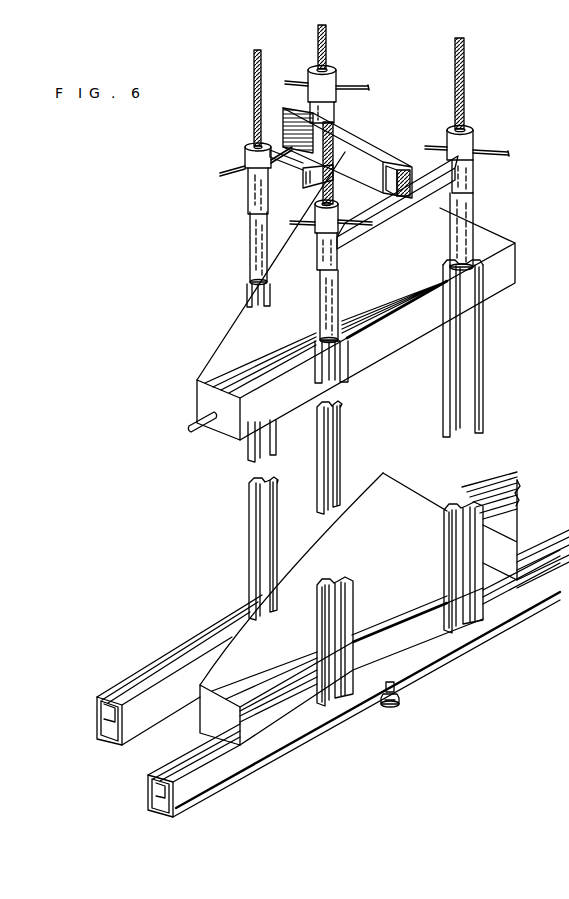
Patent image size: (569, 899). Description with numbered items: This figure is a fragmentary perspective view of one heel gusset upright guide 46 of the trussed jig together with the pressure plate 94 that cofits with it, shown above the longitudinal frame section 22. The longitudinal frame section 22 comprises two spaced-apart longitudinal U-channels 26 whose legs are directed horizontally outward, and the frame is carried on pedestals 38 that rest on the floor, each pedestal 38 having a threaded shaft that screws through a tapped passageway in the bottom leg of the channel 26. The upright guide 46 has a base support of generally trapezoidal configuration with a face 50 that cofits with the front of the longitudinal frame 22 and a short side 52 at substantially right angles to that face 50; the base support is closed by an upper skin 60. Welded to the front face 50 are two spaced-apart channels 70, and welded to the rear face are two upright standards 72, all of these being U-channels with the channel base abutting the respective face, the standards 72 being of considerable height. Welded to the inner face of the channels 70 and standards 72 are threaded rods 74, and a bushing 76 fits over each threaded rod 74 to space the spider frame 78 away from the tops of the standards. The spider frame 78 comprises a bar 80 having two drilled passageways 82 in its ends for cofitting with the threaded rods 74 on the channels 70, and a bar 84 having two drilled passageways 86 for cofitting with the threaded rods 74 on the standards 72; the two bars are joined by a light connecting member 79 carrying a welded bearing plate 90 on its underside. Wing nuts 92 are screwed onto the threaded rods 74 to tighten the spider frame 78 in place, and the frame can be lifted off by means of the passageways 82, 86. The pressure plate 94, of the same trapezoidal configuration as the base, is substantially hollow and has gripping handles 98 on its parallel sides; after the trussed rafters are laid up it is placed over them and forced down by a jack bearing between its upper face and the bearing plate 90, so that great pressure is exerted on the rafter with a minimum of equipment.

The longitudinal frame section 22 is at (103, 697).
The longitudinal U-channel 26 is at (104, 734).
The pedestal 38 is at (400, 702).
The heel gusset upright guide 46 is at (411, 497).
The face 50 is at (409, 634).
The short side 52 is at (208, 710).
The upper skin 60 is at (385, 479).
The channel 70 is at (348, 587).
The upright standard 72 is at (304, 506).
The threaded rod 74 is at (254, 60).
The bushing 76 is at (474, 212).
The spider frame 78 is at (250, 244).
The square tube beam 79 is at (362, 140).
The bar 80 is at (437, 188).
The drilled passageway 82 is at (327, 238).
The bar 84 is at (288, 172).
The drilled passageway 86 is at (247, 186).
The bearing plate 90 is at (313, 185).
The wing nut 92 is at (247, 150).
The pressure plate 94 is at (516, 272).
The gripping handle 98 is at (189, 430).